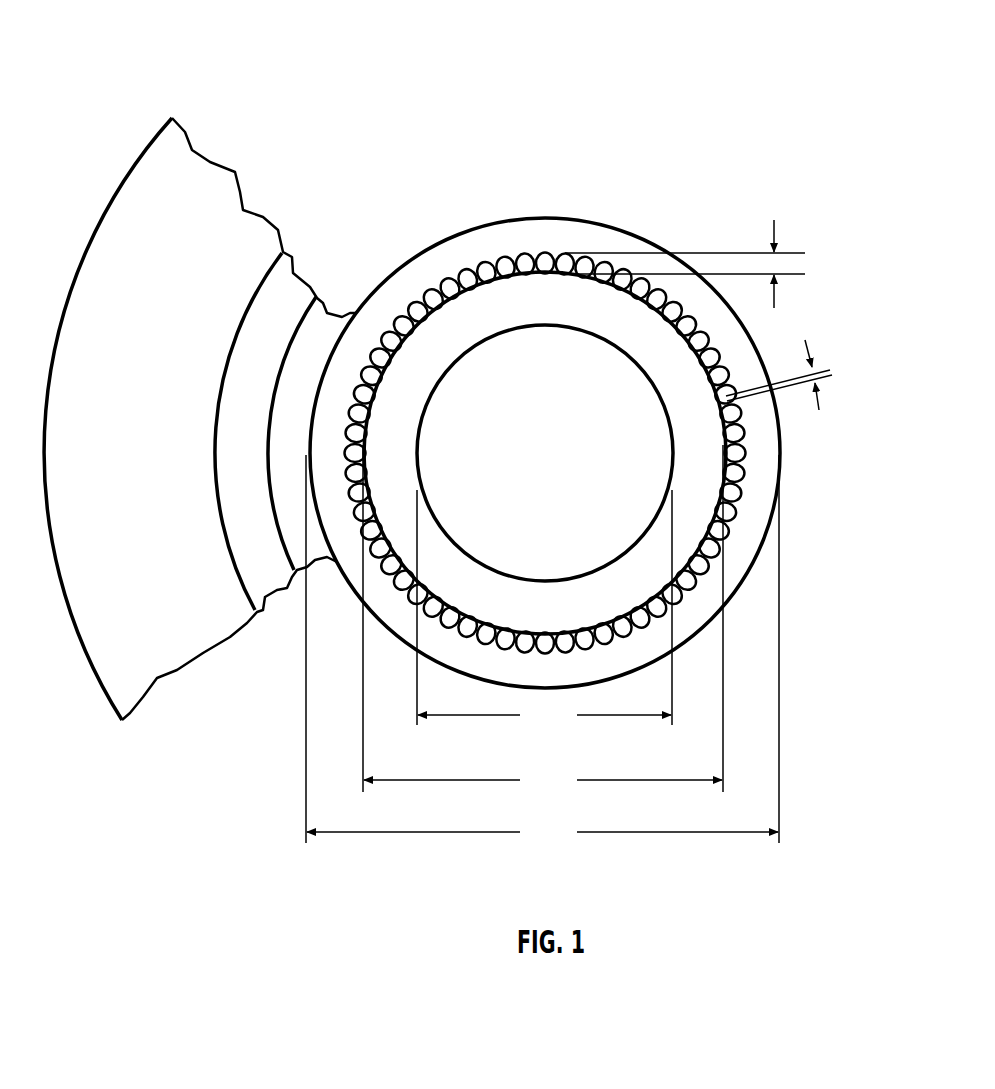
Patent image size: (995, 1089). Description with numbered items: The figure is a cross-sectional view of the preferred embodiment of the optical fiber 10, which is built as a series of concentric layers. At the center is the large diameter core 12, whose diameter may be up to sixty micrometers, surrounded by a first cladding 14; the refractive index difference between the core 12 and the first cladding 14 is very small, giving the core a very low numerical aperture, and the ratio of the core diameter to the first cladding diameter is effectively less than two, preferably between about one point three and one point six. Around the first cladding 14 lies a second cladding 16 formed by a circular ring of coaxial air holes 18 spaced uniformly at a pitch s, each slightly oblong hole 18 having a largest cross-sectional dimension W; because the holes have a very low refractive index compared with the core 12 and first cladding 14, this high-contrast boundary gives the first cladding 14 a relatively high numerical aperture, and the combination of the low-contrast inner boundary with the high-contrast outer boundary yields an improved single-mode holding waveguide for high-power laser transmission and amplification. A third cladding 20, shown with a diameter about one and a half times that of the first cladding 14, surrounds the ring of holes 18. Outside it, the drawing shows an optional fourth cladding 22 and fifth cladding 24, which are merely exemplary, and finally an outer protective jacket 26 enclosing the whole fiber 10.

The optical fiber 10 is at (582, 133).
The core 12 is at (645, 478).
The first cladding 14 is at (460, 325).
The second cladding 16 is at (402, 318).
The air hole 18 is at (487, 270).
The third cladding 20 is at (355, 345).
The fourth cladding 22 is at (297, 547).
The fifth cladding 24 is at (257, 587).
The outer protective jacket 26 is at (118, 665).